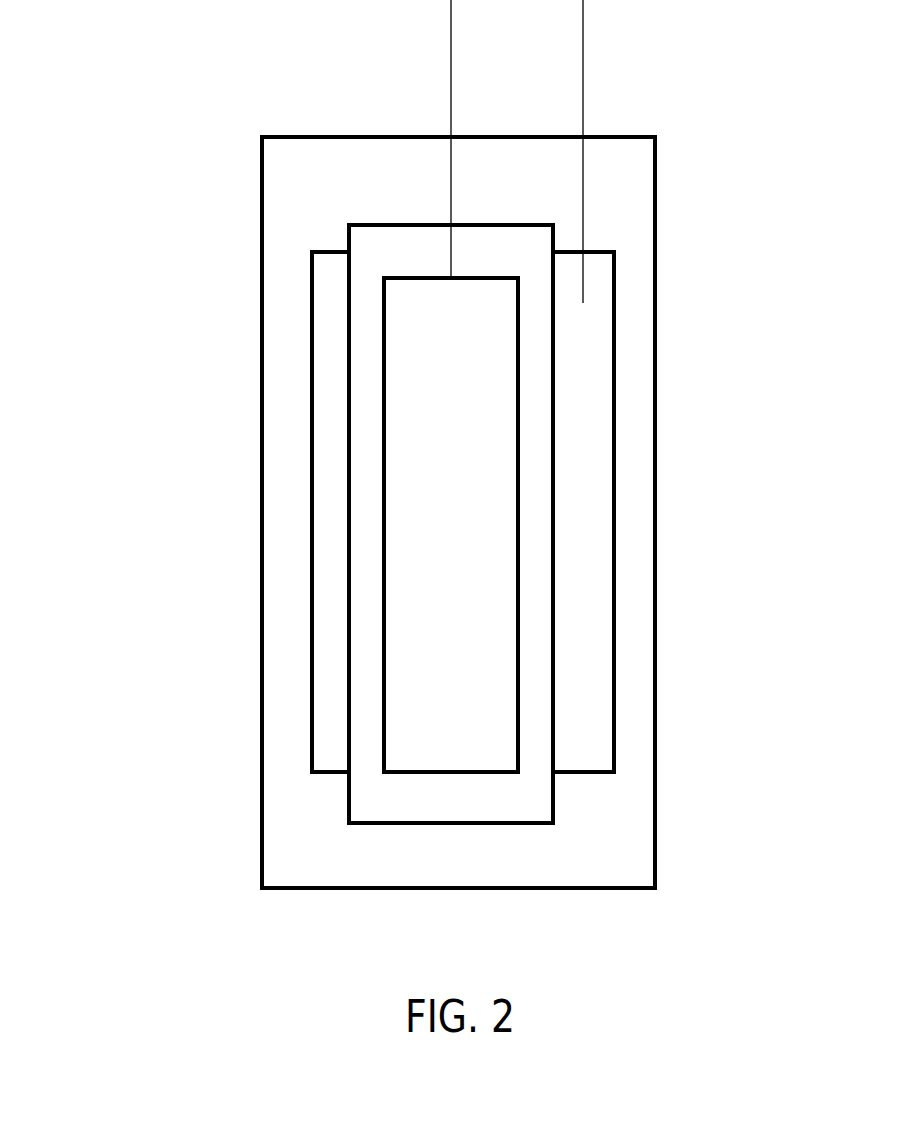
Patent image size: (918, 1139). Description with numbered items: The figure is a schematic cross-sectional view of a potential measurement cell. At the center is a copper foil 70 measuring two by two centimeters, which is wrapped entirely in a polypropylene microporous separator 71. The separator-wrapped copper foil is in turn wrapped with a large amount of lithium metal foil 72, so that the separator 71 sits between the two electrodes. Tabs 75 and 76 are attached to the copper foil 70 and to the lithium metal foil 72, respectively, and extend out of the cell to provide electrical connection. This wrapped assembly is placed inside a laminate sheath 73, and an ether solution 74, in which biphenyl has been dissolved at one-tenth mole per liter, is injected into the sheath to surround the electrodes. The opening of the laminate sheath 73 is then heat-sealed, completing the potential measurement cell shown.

The copper foil 70 is at (422, 417).
The polypropylene microporous separator 71 is at (368, 576).
The lithium metal foil 72 is at (577, 387).
The laminate sheath 73 is at (658, 604).
The ether solution 74 is at (543, 853).
The tab 75 is at (585, 73).
The tab 76 is at (448, 72).